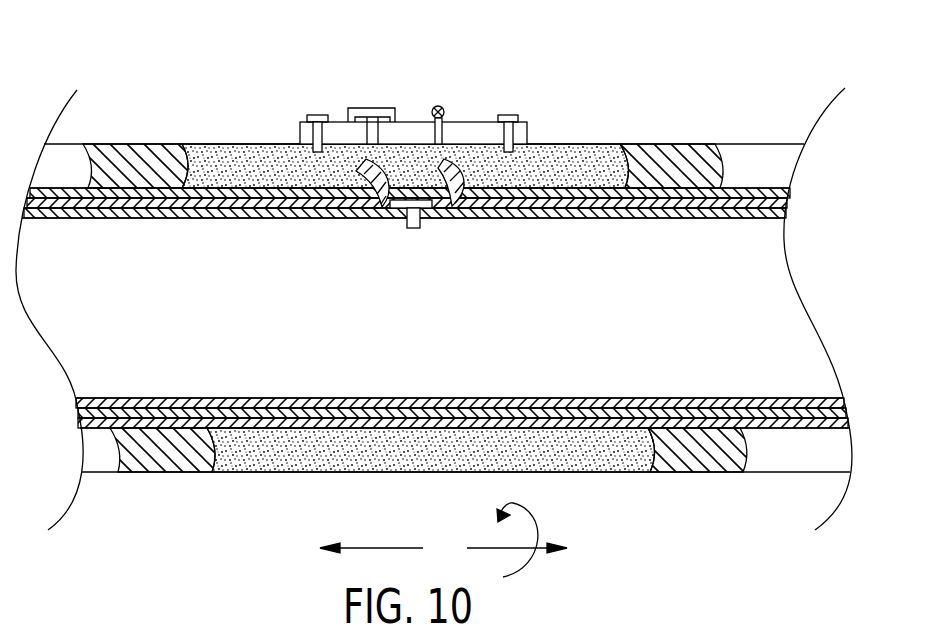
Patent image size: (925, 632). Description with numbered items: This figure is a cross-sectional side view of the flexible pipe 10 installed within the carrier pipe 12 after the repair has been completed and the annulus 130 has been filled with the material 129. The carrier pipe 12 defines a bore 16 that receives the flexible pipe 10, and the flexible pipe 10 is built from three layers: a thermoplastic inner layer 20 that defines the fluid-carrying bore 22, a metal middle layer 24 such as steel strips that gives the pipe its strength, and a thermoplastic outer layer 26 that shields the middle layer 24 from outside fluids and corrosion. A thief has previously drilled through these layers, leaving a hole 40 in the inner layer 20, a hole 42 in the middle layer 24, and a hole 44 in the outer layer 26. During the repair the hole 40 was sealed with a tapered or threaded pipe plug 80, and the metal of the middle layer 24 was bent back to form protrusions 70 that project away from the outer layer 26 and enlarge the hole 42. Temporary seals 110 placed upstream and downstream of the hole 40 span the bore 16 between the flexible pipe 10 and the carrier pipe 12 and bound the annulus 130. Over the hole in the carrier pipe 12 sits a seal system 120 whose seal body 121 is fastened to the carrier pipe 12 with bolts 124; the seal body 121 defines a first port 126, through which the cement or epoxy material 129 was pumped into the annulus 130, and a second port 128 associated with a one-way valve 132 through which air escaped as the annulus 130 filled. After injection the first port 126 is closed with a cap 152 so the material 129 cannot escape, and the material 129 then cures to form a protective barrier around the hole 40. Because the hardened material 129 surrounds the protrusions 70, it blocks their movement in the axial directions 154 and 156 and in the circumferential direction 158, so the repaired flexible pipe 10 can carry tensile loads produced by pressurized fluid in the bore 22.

The flexible pipe 10 is at (836, 336).
The carrier pipe 12 is at (215, 147).
The bore 16 is at (796, 465).
The inner layer 20 is at (673, 214).
The bore 22 is at (198, 306).
The middle layer 24 is at (744, 212).
The outer layer 26 is at (765, 192).
The hole 40 is at (427, 213).
The hole 42 is at (375, 212).
The hole 44 is at (468, 190).
The protrusions 70 is at (360, 186).
The pipe plug 80 is at (412, 230).
The temporary seals 110 is at (127, 148).
The seal system 120 is at (435, 76).
The seal body 121 is at (527, 135).
The bolts 124 is at (513, 118).
The first port 126 is at (362, 135).
The second port 128 is at (473, 101).
The material 129 is at (527, 460).
The annulus 130 is at (268, 472).
The valve 132 is at (440, 106).
The cap 152 is at (370, 108).
The direction 154 is at (377, 547).
The direction 156 is at (483, 547).
The direction 158 is at (532, 572).